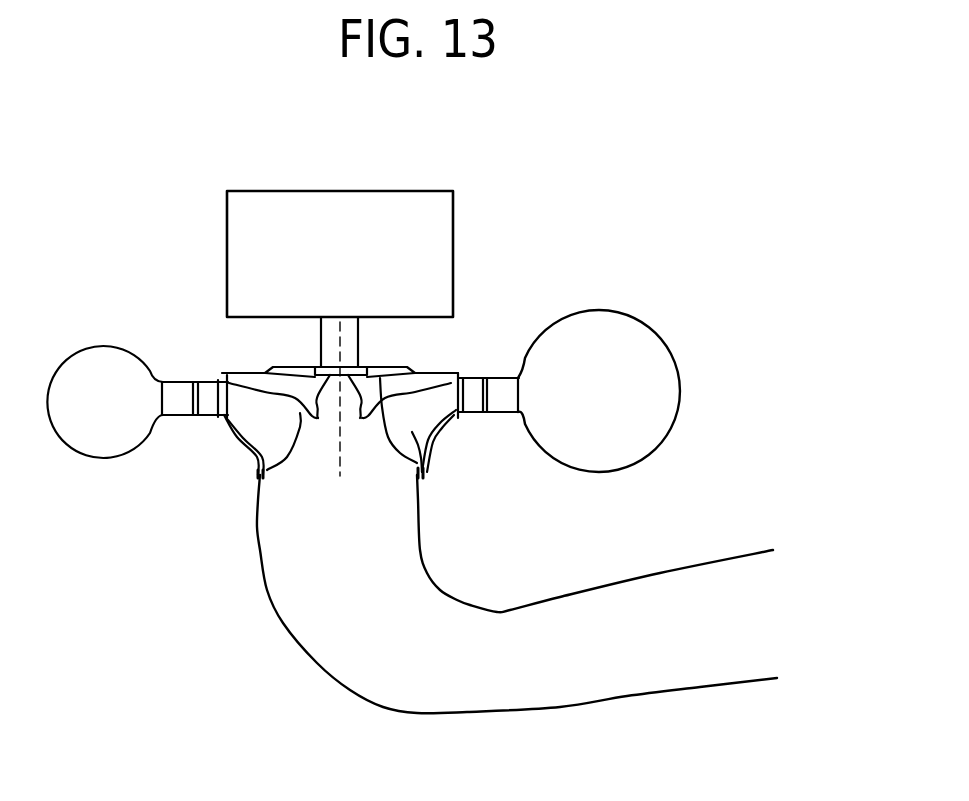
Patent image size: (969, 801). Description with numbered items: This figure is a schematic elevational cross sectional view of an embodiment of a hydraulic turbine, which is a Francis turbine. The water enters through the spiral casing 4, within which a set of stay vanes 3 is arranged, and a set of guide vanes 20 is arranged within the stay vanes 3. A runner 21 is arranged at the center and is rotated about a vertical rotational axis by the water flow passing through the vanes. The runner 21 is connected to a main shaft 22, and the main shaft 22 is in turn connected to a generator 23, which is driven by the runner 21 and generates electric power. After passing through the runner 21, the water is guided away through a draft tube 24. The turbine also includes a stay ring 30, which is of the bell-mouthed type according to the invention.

The stay vanes 3 is at (508, 385).
The spiral casing 4 is at (651, 330).
The guide vanes 20 is at (472, 385).
The runner 21 is at (410, 427).
The main shaft 22 is at (321, 336).
The generator 23 is at (257, 246).
The draft tube 24 is at (258, 552).
The stay ring 30 is at (508, 424).